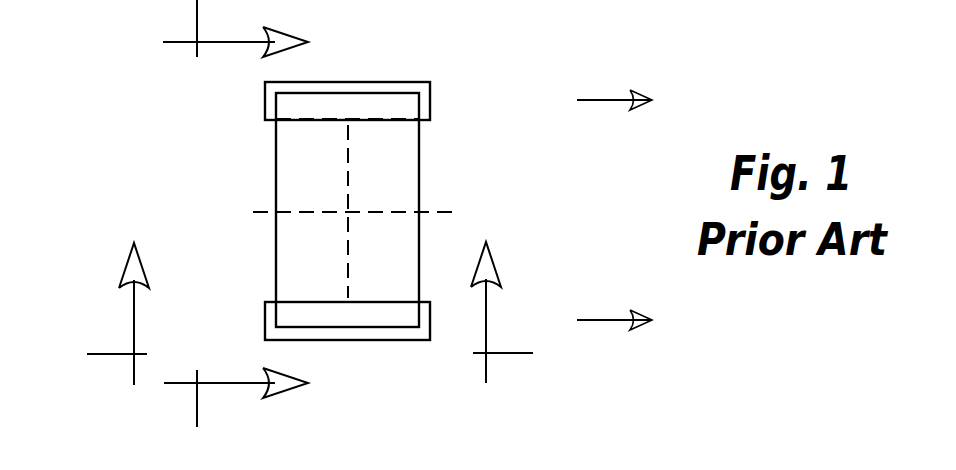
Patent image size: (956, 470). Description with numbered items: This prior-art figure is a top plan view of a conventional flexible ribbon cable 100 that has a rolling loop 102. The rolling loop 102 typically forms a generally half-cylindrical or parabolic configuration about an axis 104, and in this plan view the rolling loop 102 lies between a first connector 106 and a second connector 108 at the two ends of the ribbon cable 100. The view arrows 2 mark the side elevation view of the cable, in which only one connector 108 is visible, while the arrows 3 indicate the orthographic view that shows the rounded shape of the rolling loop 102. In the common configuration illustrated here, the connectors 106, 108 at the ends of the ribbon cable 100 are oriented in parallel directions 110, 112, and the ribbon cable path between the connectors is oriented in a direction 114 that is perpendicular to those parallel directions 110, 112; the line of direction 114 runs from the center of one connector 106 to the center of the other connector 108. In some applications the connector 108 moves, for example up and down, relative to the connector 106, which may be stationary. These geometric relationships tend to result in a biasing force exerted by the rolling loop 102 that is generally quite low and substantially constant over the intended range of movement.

The flexible ribbon cable 100 is at (356, 206).
The rolling loop 102 is at (402, 160).
The axis 104 is at (285, 208).
The first connector 106 is at (362, 82).
The second connector 108 is at (333, 340).
The direction 110 is at (587, 100).
The direction 112 is at (587, 320).
The direction 114 is at (348, 190).
The section arrows 2- 2 is at (310, 314).
The section arrows 3- 3 is at (235, 213).